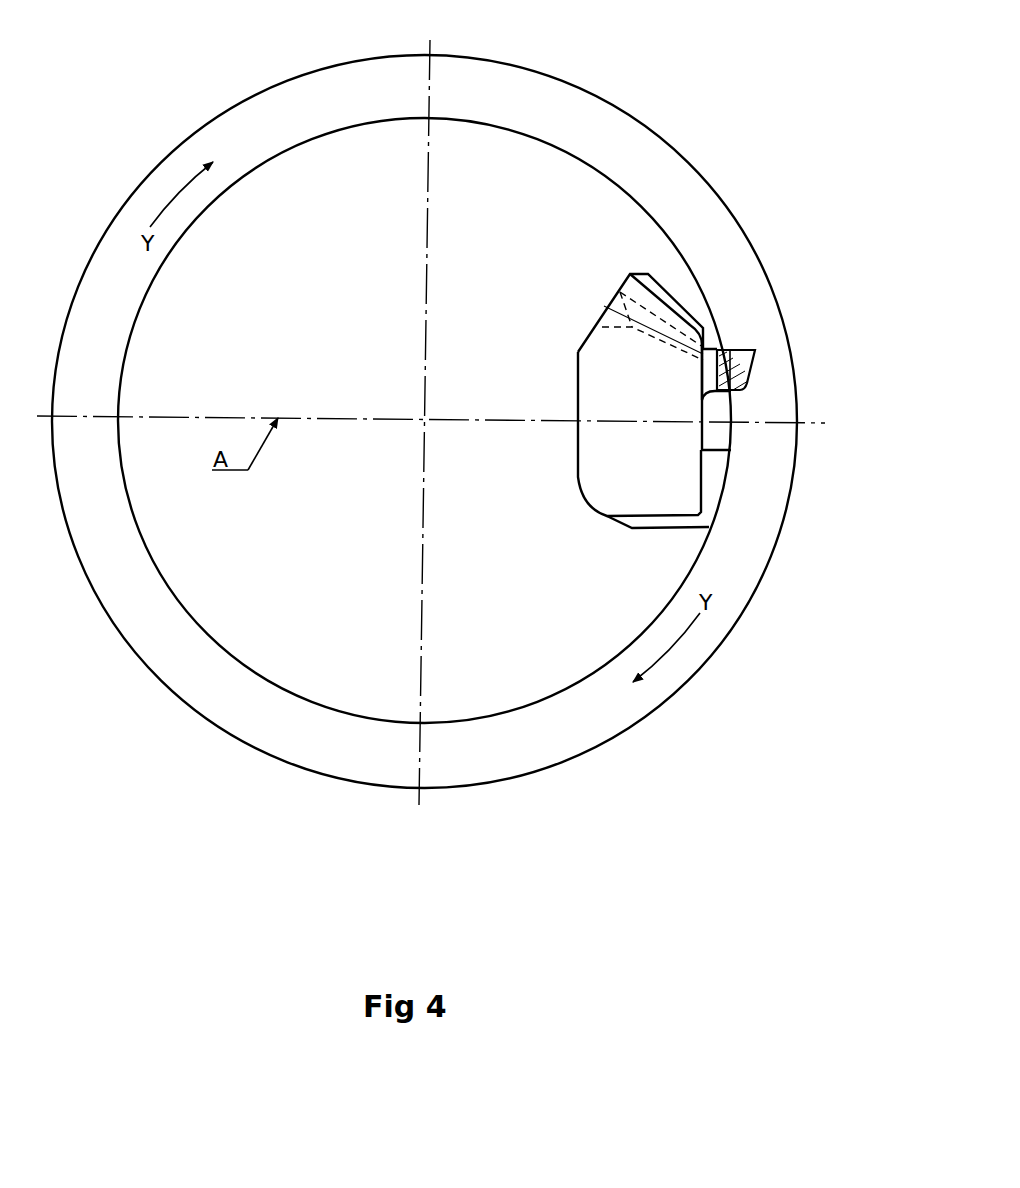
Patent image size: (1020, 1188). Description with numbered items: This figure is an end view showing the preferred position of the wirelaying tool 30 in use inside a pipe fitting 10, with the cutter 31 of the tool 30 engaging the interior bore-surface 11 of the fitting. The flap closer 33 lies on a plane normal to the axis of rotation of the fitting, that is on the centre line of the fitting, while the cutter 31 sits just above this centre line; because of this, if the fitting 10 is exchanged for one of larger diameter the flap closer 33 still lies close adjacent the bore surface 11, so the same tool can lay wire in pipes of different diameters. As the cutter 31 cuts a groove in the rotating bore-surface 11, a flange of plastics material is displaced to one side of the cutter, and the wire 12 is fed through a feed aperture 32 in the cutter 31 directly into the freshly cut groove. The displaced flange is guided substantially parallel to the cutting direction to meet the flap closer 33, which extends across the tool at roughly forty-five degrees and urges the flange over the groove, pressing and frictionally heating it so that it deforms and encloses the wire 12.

The pipe fitting 10 is at (568, 80).
The interior bore-surface 11 is at (515, 135).
The wire 12 is at (607, 298).
The tool 30 is at (577, 396).
The cutter 31 is at (748, 348).
The feed aperture 32 is at (657, 327).
The flap closer 33 is at (718, 410).